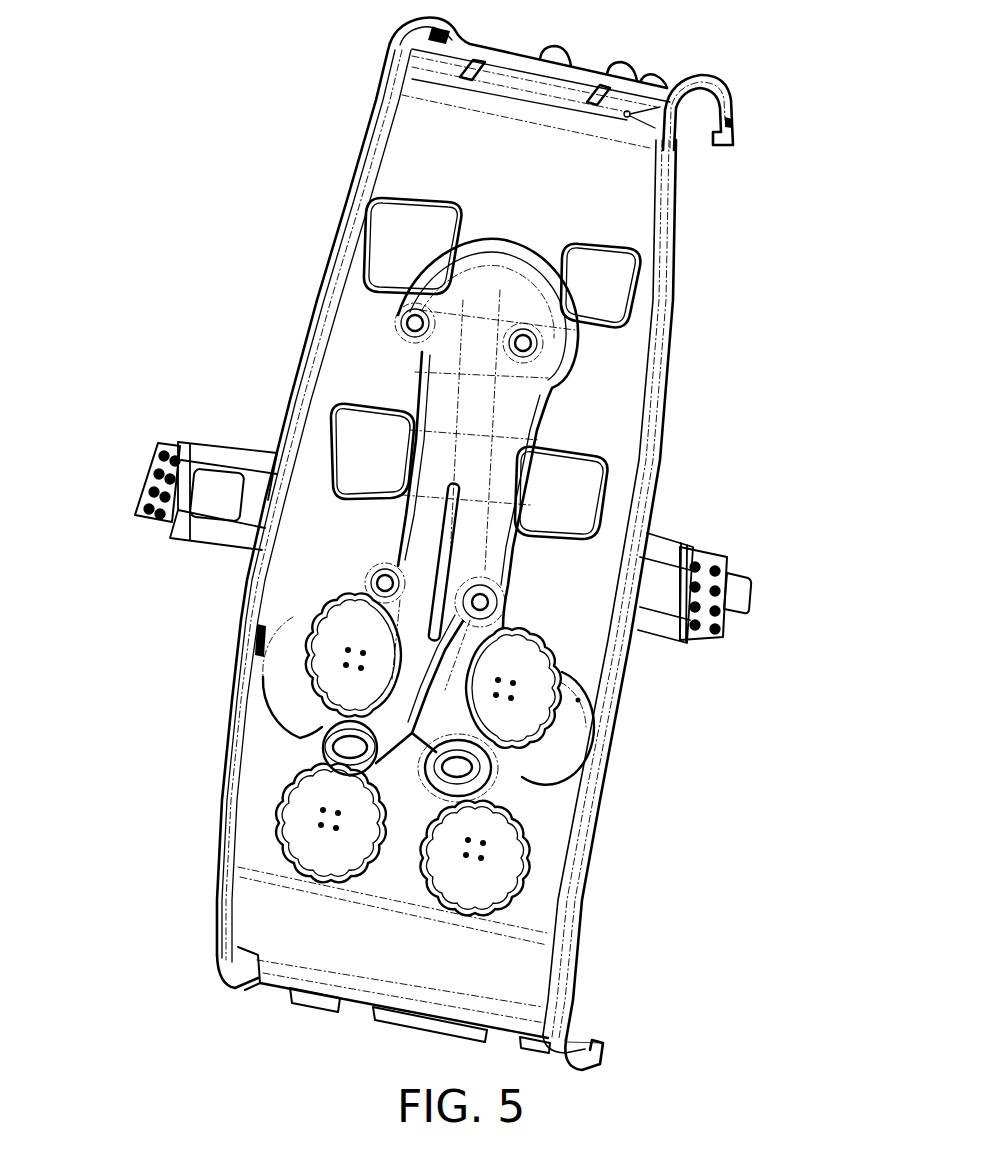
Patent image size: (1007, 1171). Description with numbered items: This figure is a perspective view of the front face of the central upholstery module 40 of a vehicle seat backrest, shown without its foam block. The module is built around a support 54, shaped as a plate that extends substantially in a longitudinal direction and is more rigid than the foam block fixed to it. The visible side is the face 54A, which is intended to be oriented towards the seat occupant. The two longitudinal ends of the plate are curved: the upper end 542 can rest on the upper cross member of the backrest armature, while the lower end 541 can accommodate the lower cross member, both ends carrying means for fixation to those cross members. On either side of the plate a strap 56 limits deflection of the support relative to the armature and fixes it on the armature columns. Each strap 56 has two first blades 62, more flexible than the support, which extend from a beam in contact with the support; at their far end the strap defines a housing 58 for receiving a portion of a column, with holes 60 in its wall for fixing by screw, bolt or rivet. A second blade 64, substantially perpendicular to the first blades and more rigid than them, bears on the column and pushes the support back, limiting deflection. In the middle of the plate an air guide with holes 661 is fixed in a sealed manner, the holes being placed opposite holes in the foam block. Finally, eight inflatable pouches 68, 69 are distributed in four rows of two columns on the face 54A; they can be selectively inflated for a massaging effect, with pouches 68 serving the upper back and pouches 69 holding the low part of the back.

The central upholstery module 40 is at (240, 113).
The support 54 is at (350, 300).
The face 54A is at (407, 140).
The lower end 541 is at (619, 1040).
The upper end 542 is at (746, 79).
The strap 56 is at (449, 537).
The housing 58 is at (140, 485).
The holes 60 is at (152, 458).
The first blade 62 is at (212, 530).
The second blade 64 is at (210, 487).
The holes 661 is at (440, 316).
The inflatable pouches 68 is at (390, 235).
The inflatable pouches 69 is at (313, 657).